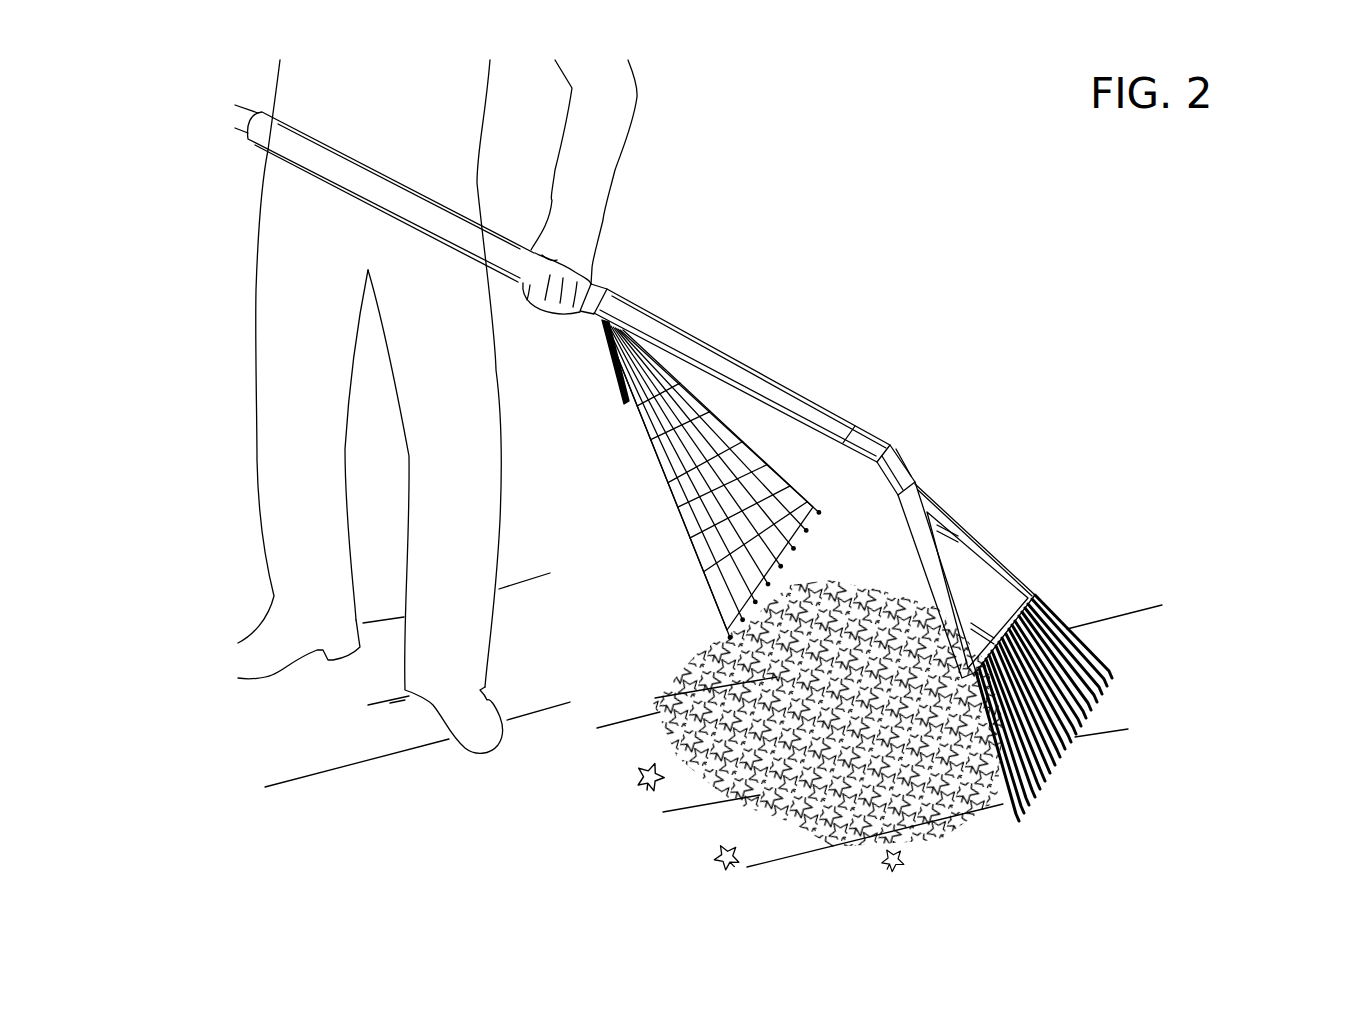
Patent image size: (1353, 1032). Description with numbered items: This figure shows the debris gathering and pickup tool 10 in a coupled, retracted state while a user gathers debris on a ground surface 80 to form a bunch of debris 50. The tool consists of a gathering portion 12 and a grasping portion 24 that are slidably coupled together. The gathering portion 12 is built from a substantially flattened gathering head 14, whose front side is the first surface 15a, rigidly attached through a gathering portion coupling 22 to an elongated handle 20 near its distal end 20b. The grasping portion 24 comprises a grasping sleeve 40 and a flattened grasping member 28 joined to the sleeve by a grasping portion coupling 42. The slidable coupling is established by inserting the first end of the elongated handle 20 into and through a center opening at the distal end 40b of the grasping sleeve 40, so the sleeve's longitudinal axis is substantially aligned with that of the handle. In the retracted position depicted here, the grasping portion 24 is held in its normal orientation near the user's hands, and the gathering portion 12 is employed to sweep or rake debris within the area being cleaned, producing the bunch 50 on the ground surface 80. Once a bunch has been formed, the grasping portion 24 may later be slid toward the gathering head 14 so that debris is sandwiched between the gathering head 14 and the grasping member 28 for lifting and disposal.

The gathering and pickup tool 10 is at (769, 463).
The gathering portion 12 is at (1090, 616).
The gathering head 14 is at (990, 560).
The first surface or side of the gathering head 15a is at (973, 607).
The elongated handle 20 is at (710, 357).
The distal end of the elongated handle 20b is at (850, 424).
The gathering portion coupling 22 is at (896, 462).
The grasping portion 24 is at (567, 283).
The grasping member 28 is at (640, 499).
The grasping sleeve 40 is at (383, 200).
The distal end of the grasping sleeve 40b is at (607, 282).
The grasping portion coupling 42 is at (603, 327).
The bunch of debris 50 is at (940, 832).
The ground surface 80 is at (552, 768).